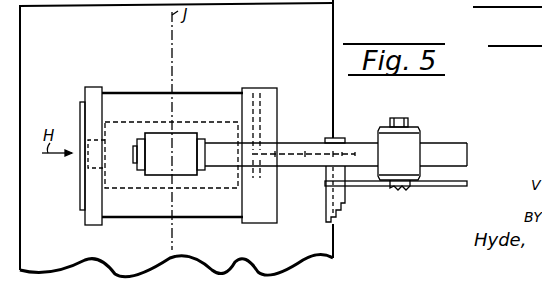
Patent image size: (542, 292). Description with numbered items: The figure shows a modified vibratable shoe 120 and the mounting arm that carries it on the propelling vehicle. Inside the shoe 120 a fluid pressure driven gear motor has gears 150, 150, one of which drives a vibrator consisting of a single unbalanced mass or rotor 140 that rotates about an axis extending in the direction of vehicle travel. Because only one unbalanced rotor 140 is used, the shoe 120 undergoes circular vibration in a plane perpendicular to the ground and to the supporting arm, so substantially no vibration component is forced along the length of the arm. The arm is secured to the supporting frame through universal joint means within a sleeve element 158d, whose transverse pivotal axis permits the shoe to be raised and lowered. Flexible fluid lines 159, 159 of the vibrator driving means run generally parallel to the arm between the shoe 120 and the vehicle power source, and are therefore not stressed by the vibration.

The vibratable shoe 120 is at (176, 138).
The unbalanced mass or rotor 140 is at (158, 188).
The gears 150 is at (252, 118).
The flexible fluid lines 159 is at (311, 141).
The sleeve element 158d is at (412, 142).